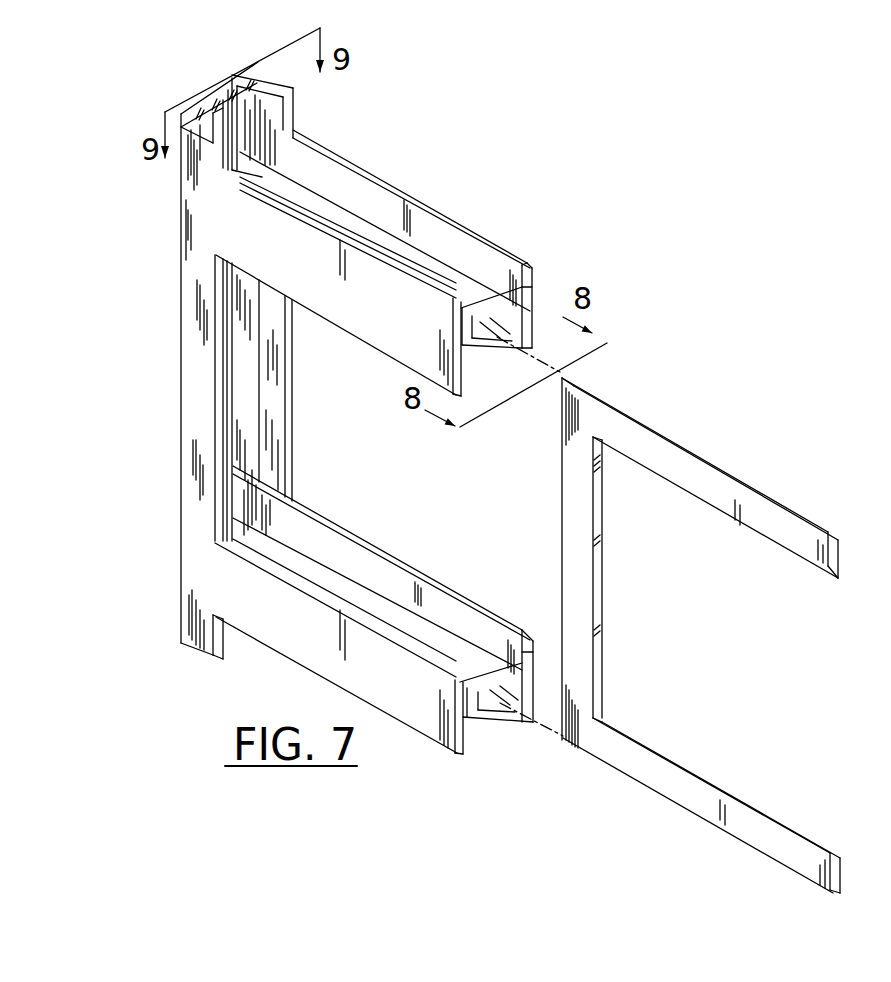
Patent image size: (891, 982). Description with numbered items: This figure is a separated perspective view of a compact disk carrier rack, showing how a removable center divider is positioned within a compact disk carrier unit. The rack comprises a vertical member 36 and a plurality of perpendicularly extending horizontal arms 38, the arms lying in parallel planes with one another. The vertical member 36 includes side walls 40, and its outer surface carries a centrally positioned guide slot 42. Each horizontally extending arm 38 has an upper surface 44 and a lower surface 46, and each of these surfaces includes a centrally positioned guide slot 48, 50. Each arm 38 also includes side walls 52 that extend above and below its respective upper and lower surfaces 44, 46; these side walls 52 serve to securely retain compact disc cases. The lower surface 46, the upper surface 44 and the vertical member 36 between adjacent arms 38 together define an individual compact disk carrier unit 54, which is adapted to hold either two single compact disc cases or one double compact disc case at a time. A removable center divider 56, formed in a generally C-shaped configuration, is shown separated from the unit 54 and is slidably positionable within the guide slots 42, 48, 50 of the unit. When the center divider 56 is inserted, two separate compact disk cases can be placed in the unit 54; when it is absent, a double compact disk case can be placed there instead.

The vertical member 36 is at (192, 226).
The horizontal arms 38 is at (376, 172).
The side walls 40 is at (218, 400).
The guide slot 42 is at (220, 401).
The upper surface 44 is at (524, 297).
The lower surface 46 is at (470, 358).
The guide slot 48 is at (577, 358).
The guide slot 50 is at (495, 340).
The side walls 52 is at (400, 313).
The compact disk carrier unit 54 is at (181, 592).
The removable center divider 56 is at (690, 472).